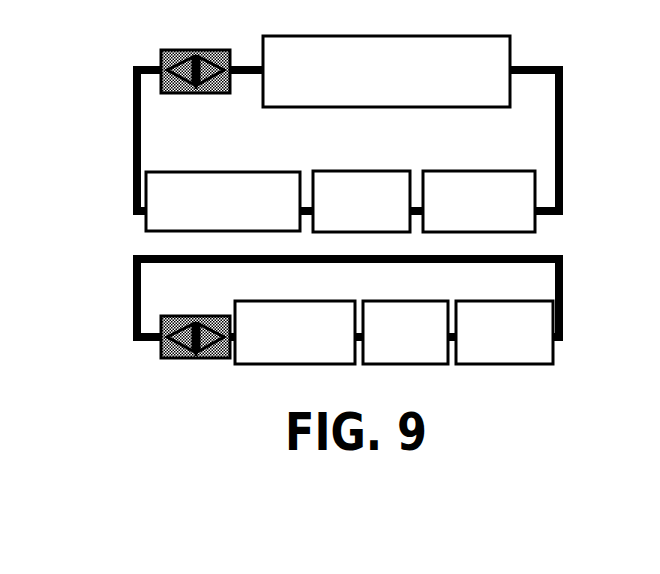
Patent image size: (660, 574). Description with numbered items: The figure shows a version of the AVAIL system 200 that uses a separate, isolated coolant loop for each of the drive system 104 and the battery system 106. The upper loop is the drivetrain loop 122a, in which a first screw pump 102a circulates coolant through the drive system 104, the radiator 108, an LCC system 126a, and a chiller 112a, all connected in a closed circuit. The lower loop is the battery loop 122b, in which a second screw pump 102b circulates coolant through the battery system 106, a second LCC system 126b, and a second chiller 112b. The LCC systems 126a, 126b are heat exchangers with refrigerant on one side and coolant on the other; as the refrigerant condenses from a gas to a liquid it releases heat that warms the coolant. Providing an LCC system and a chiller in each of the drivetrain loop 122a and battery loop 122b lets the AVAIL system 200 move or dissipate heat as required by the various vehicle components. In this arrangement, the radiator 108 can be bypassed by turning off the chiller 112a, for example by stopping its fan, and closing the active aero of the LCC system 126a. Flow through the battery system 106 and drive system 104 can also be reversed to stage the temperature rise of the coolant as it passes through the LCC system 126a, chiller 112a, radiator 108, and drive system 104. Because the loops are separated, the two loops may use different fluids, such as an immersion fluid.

The AVAIL system 200 is at (557, 24).
The first screw pump (SP1) 102a is at (195, 58).
The second screw pump (SP2) 102b is at (195, 355).
The drive system 104 is at (386, 71).
The battery system 106 is at (295, 332).
The radiator 108 is at (223, 201).
The chiller 112a is at (479, 201).
The chiller 112b is at (504, 332).
The drivetrain loop 122a is at (579, 33).
The battery loop 122b is at (579, 245).
The LCC system 126a is at (361, 201).
The LCC system 126b is at (405, 332).